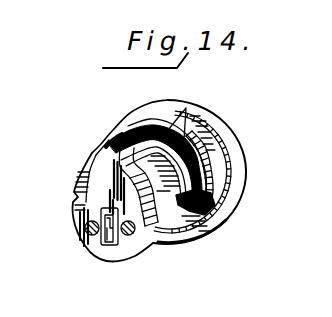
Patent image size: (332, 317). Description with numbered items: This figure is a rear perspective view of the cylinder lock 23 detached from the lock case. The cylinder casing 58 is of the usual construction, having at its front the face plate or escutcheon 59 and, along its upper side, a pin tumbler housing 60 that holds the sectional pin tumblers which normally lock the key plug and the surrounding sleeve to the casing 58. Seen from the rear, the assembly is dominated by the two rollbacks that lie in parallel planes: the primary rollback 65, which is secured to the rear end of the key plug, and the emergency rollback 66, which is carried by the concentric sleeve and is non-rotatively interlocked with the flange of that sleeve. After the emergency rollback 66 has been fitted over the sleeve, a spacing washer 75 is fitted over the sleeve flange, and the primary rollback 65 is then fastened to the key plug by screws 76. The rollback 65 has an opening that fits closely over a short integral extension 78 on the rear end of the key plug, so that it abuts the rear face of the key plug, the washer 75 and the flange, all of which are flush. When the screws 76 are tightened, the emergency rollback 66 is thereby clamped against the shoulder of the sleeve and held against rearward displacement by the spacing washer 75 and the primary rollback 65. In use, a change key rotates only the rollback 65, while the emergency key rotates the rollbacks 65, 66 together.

The cylinder lock 23 is at (154, 156).
The cylinder casing 58 is at (214, 191).
The face plate or escutcheon 59 is at (231, 146).
The pin tumbler housing 60 is at (168, 130).
The primary rollback 65 is at (95, 156).
The emergency rollback 66 is at (116, 142).
The spacing washer 75 is at (162, 238).
The screws 76 is at (124, 234).
The extension 78 is at (101, 239).